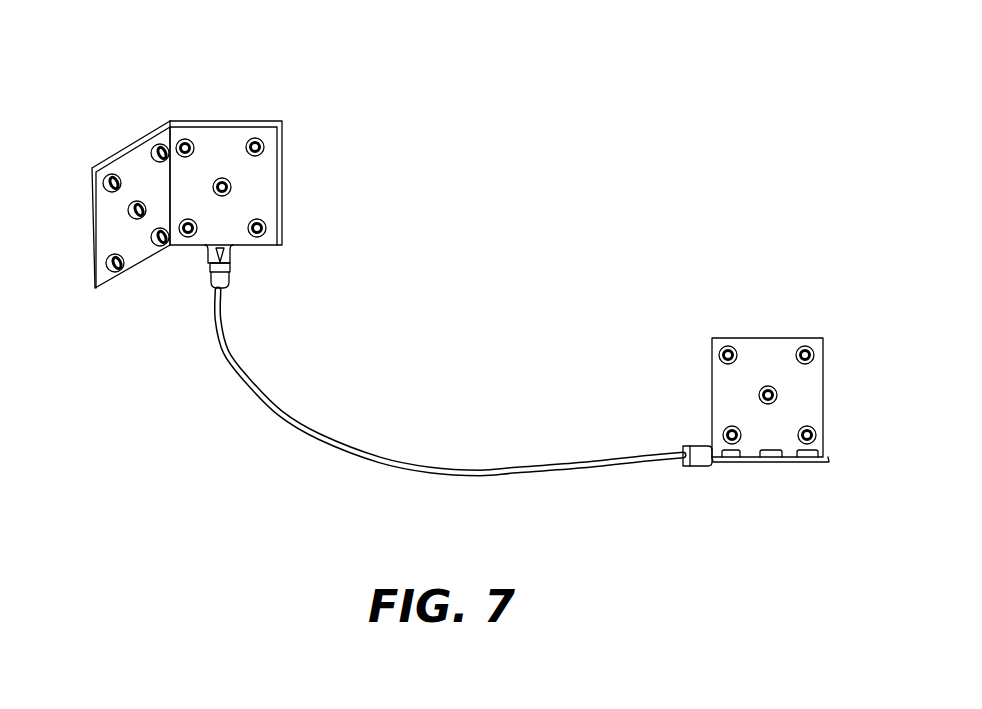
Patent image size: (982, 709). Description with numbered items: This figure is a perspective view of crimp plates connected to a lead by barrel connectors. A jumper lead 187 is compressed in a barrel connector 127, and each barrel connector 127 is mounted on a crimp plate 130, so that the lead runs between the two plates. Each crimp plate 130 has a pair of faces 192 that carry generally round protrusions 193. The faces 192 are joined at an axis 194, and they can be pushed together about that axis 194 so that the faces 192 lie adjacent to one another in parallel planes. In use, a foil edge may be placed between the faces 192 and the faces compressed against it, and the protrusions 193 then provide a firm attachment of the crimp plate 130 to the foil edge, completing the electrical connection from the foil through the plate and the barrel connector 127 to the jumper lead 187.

The crimp plate 130 is at (460, 285).
The faces 192 is at (125, 165).
The protrusions 193 is at (127, 210).
The axis 194 is at (172, 112).
The barrel connector 127 is at (233, 277).
The jumper lead 187 is at (318, 433).